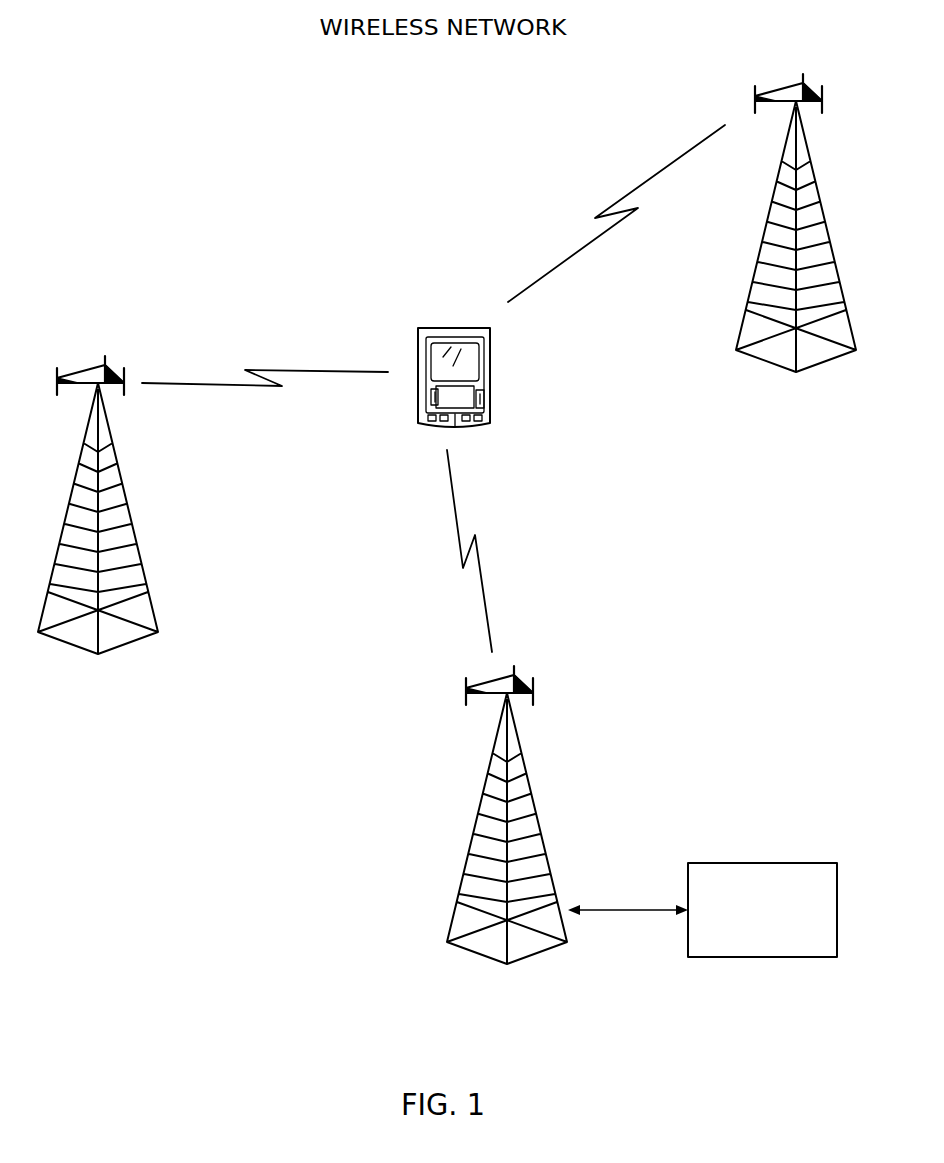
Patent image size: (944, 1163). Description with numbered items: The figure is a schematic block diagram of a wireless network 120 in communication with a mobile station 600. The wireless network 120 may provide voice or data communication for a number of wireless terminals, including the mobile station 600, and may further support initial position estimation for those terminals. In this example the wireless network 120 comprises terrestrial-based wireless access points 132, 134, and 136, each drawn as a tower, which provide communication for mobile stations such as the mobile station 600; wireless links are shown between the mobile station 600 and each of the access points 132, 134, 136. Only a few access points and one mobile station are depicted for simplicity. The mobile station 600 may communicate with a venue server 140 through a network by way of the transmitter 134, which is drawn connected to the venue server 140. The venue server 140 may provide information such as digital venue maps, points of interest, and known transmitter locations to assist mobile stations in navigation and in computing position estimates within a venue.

The wireless network 120 is at (166, 96).
The wireless access point 132 is at (113, 652).
The wireless access point 134 is at (467, 950).
The wireless access point 136 is at (780, 367).
The venue server 140 is at (777, 863).
The mobile station 600 is at (493, 352).